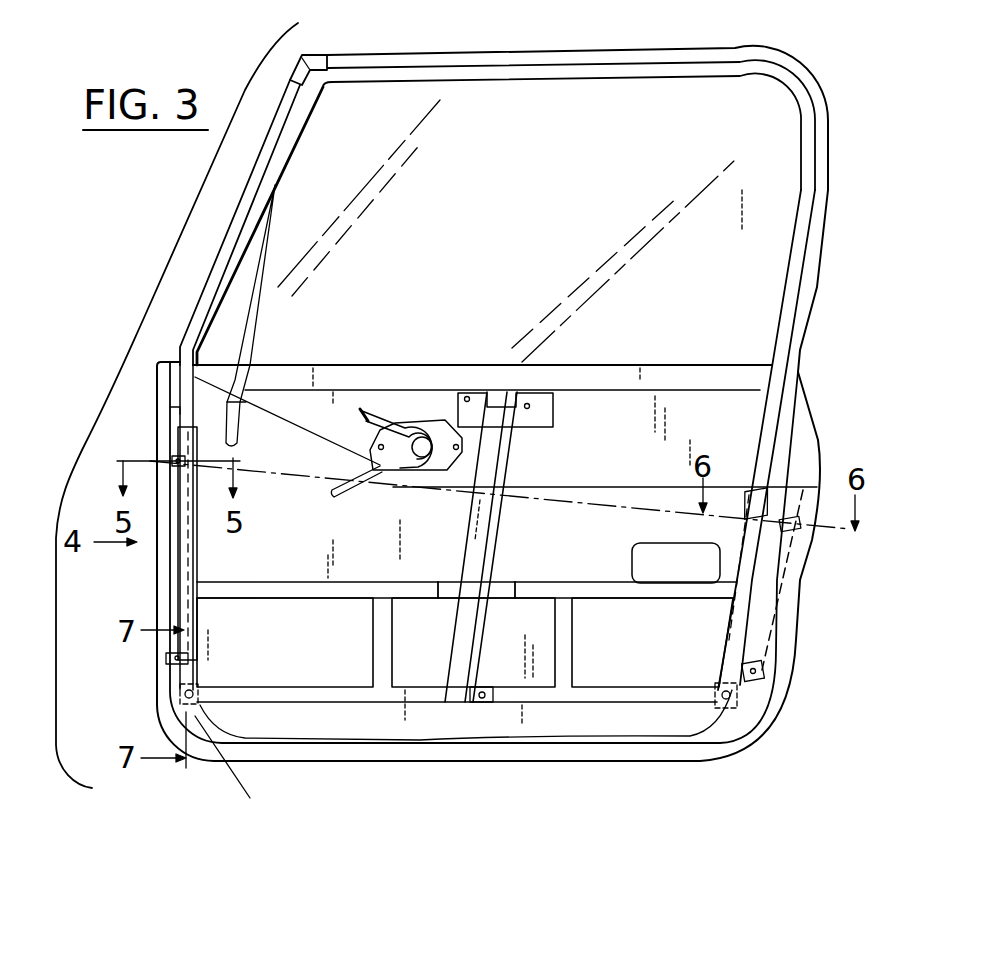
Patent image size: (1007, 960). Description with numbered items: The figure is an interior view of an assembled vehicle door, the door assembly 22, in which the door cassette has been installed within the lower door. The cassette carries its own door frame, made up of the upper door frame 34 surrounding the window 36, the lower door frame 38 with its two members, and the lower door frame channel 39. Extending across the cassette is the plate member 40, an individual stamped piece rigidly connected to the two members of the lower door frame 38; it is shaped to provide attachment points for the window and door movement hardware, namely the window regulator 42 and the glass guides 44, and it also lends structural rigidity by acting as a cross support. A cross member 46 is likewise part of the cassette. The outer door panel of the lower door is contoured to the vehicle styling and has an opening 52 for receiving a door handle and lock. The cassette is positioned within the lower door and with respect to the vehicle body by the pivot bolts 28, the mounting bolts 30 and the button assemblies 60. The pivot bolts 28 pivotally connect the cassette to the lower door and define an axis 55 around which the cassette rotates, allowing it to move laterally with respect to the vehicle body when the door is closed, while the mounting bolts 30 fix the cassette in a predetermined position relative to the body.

The door assembly 22 is at (124, 342).
The pivot bolts 28 is at (170, 457).
The mounting bolts 30 is at (166, 664).
The upper door frame 34 is at (664, 76).
The window 36 is at (731, 97).
The lower door frame 38 is at (785, 420).
The lower door frame channel 39 is at (772, 505).
The plate member 40 is at (750, 408).
The window regulator 42 is at (385, 478).
The glass guides 44 is at (461, 653).
The cross member 46 is at (570, 695).
The opening 52 is at (703, 560).
The axis 55 is at (572, 500).
The button assemblies 60 is at (193, 712).